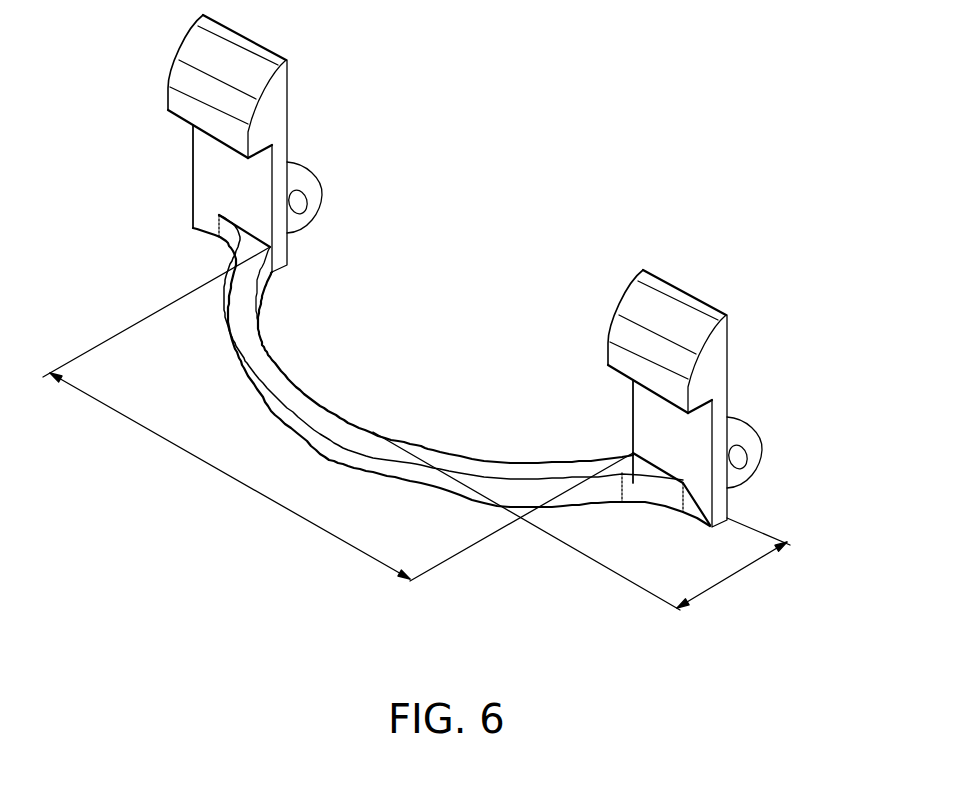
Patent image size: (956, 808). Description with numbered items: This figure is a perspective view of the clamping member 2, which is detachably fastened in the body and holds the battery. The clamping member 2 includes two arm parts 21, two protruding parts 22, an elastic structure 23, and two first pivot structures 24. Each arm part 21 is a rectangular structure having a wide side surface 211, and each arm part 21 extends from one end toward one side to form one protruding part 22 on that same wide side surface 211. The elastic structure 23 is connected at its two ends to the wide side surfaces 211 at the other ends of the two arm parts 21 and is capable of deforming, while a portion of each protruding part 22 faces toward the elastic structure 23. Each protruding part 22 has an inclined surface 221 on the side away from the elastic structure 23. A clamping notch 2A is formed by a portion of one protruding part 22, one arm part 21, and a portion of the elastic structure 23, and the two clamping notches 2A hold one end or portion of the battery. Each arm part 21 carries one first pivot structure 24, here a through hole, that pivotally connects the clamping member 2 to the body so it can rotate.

The clamping member 2 is at (762, 43).
The arm part 21 is at (277, 170).
The wide side surface 211 is at (215, 165).
The protruding part 22 is at (270, 113).
The inclined surface 221 is at (200, 50).
The elastic structure 23 is at (332, 422).
The first pivot structure 24 is at (300, 203).
The clamping notch 2A is at (243, 190).